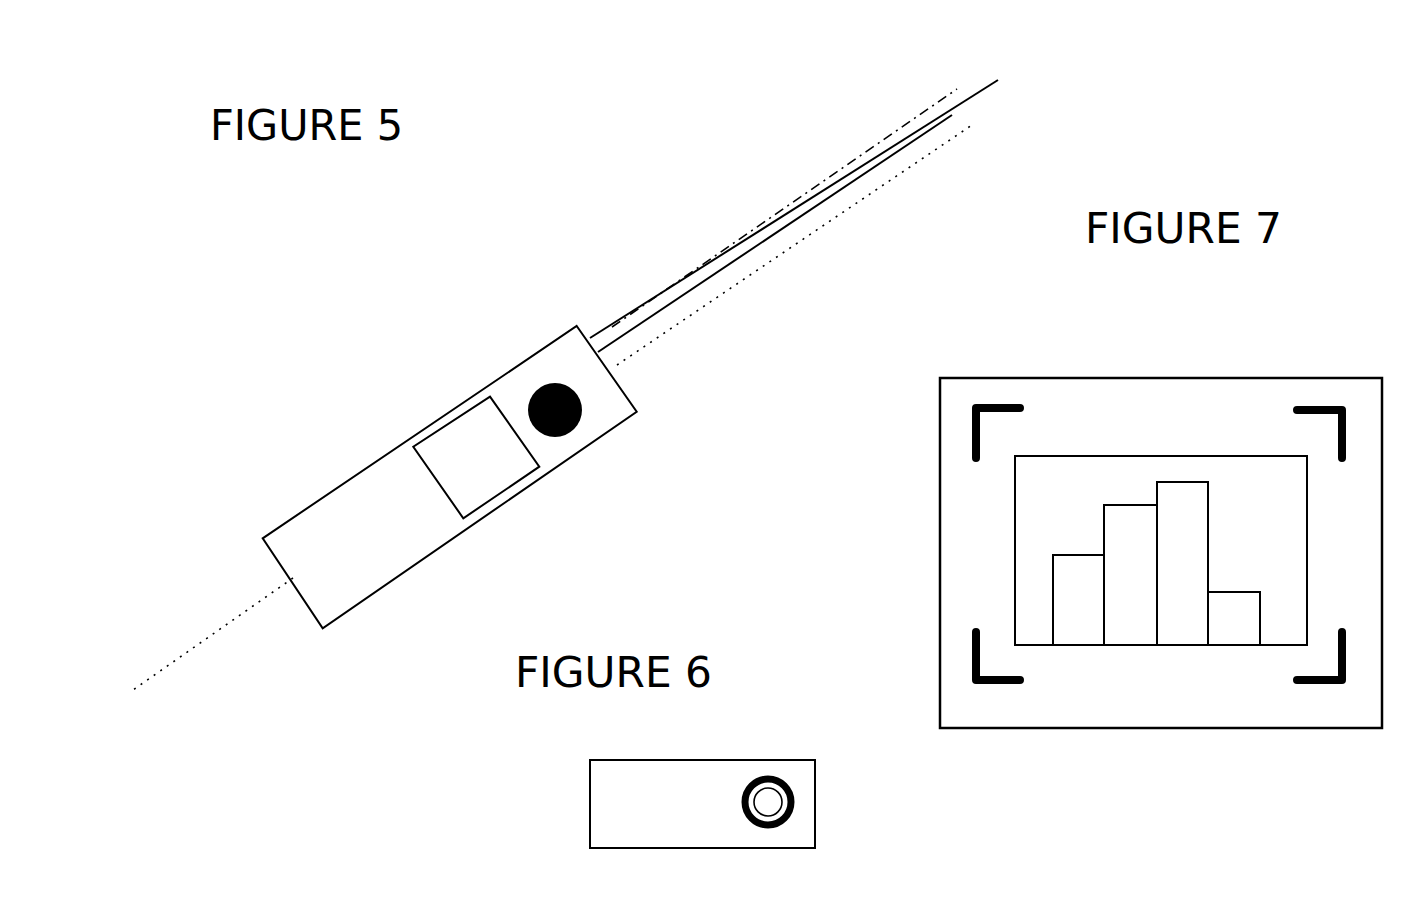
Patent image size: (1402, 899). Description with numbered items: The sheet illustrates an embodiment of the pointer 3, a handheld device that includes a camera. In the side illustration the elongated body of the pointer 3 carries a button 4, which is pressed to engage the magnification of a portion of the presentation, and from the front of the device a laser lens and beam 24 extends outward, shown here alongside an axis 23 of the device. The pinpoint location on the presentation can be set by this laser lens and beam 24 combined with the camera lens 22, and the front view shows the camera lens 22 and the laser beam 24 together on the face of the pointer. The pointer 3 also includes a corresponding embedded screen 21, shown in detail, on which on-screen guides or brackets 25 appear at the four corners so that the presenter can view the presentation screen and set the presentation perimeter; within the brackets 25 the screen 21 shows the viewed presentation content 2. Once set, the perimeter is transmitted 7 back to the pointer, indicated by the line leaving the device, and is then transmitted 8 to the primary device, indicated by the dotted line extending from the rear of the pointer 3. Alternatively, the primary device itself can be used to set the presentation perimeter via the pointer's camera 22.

In FIG. 7, the histogram display 2 is at (1015, 537).
In FIG. 5, the pointer 3 is at (403, 443).
In FIG. 5, the button 4 is at (540, 380).
In FIG. 5, the transmission 7 is at (895, 178).
In FIG. 5, the transmission 8 is at (235, 620).
In FIG. 5, the embedded screen 21 is at (503, 493).
In FIG. 7, the embedded screen 21 is at (940, 587).
In FIG. 5, the camera lens 22 is at (607, 325).
In FIG. 6, the camera lens 22 is at (770, 777).
In FIG. 5, the optical axis 23 is at (807, 192).
In FIG. 5, the laser lens and beam 24 is at (950, 113).
In FIG. 6, the laser lens and beam 24 is at (785, 810).
In FIG. 7, the on-screen guides or brackets 25 is at (997, 408).